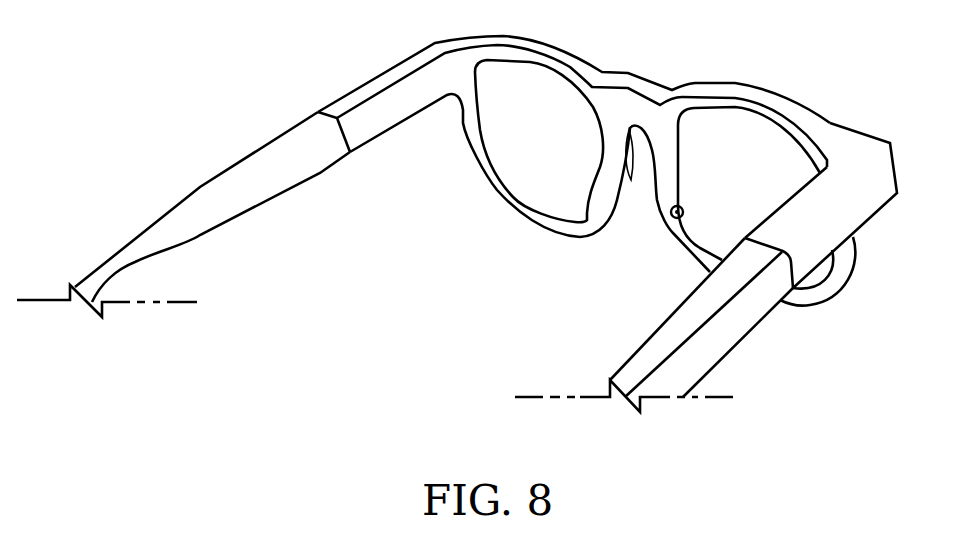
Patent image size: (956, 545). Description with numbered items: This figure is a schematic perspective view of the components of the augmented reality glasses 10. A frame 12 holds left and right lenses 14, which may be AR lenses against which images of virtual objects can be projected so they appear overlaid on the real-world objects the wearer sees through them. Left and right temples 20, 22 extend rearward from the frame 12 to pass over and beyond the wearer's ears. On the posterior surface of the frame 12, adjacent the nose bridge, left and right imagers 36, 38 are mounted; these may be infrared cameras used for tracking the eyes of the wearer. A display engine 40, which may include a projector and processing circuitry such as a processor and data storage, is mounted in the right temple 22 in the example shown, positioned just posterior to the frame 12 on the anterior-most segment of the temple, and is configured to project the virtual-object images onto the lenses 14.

The augmented reality glasses 10 is at (862, 62).
The frame 12 is at (780, 105).
The lenses 14 is at (518, 167).
The left temple 20 is at (310, 165).
The right temple 22 is at (750, 323).
The left imager 36 is at (602, 210).
The right imager 38 is at (677, 204).
The display engine 40 is at (837, 192).